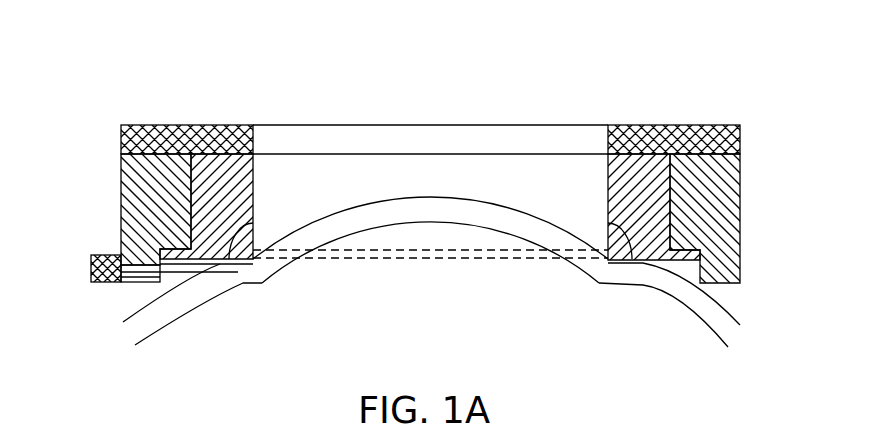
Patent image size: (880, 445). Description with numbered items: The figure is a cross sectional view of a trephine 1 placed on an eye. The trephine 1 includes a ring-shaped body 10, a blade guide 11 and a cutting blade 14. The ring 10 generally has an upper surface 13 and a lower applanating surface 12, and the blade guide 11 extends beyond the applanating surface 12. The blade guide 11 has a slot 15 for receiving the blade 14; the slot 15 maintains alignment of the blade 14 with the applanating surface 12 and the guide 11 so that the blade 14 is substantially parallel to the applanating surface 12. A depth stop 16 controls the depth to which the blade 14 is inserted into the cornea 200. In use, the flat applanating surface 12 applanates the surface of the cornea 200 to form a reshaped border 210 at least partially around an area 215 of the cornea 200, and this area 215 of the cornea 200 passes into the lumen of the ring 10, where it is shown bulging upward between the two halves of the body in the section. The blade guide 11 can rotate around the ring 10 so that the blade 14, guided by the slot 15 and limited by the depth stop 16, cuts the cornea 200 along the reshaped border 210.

The trephine 1 is at (630, 88).
The ring-shaped body 10 is at (233, 195).
The blade guide 11 is at (127, 180).
The applanating surface 12 is at (253, 222).
The upper surface 13 is at (228, 160).
The cutting blade 14 is at (220, 272).
The slot 15 is at (140, 272).
The depth stop 16 is at (102, 256).
The cornea 200 is at (695, 320).
The reshaped border 210 is at (253, 264).
The area of cornea 215 is at (397, 198).